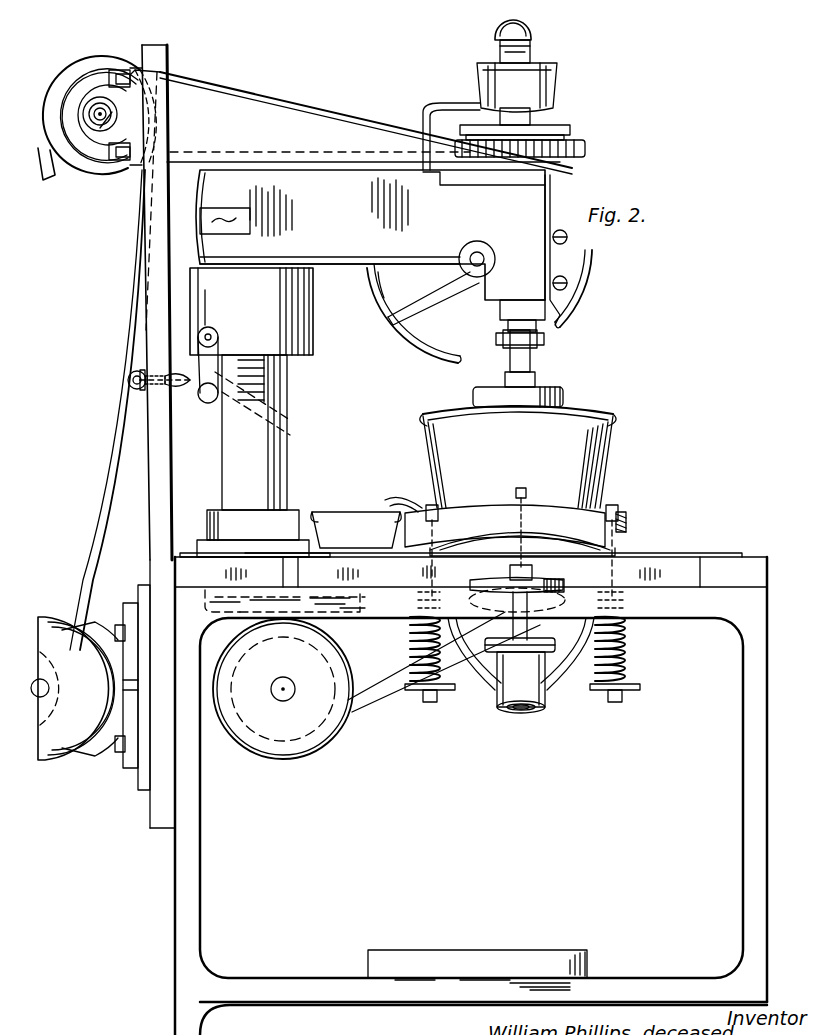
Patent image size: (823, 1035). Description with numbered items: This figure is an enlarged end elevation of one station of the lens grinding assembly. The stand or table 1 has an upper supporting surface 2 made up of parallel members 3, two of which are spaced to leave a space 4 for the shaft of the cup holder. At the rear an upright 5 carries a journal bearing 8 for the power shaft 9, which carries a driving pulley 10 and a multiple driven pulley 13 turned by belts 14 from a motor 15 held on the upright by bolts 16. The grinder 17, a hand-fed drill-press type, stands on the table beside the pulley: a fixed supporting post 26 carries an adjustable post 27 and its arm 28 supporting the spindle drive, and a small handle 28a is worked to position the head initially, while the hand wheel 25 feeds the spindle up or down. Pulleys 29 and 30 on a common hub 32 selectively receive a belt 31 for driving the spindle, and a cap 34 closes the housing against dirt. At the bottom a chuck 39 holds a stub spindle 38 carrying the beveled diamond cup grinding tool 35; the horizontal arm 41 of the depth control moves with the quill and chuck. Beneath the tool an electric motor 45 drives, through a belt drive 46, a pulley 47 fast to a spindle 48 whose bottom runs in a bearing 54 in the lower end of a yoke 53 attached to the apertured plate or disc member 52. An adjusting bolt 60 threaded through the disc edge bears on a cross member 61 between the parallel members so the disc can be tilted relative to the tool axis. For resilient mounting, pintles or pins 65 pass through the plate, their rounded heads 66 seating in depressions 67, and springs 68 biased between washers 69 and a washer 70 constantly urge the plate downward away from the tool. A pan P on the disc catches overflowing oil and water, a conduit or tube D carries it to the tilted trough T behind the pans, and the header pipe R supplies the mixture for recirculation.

The stand or table 1 is at (742, 818).
The upper supporting surface 2 is at (762, 560).
The parallel members 3 is at (690, 560).
The space 4 is at (430, 575).
The upright 5 is at (150, 515).
The journal bearing 8 is at (135, 117).
The power shaft 9 is at (103, 122).
The driving pulley 10 is at (68, 78).
The multiple driven pulley 13 is at (68, 170).
The belts 14 is at (95, 522).
The motor 15 is at (48, 618).
The bolts 16 is at (118, 622).
The grinder 17 is at (545, 240).
The hand wheel 25 is at (440, 366).
The fixed supporting post 26 is at (288, 452).
The adjustable post 27 is at (313, 345).
The arm 28 is at (347, 283).
The small handle 28a is at (207, 404).
The pulley 29 is at (568, 136).
The pulley 30 is at (586, 160).
The belt 31 is at (330, 112).
The common hub 32 is at (540, 122).
The cap 34 is at (531, 40).
The grinding tool 35 is at (556, 388).
The stub spindle 38 is at (505, 374).
The chuck 39 is at (510, 352).
The horizontal arm 41 is at (540, 340).
The electric motor 45 is at (288, 757).
The belt drive 46 is at (360, 705).
The pulley 47 is at (560, 562).
The spindle 48 is at (528, 630).
The apertured plate or disc member 52 is at (545, 508).
The yoke 53 is at (566, 650).
The bearing 54 is at (530, 708).
The adjusting bolt 60 is at (520, 490).
The cross member 61 is at (726, 556).
The pintles or pins 65 is at (638, 540).
The rounded heads 66 is at (436, 508).
The depression 67 is at (628, 514).
The springs 68 is at (410, 650).
The washers 69 is at (636, 697).
The washer 70 is at (405, 612).
The header pipe R is at (128, 382).
The conduit or tube D is at (390, 500).
The trough T is at (330, 512).
The pan P is at (620, 437).